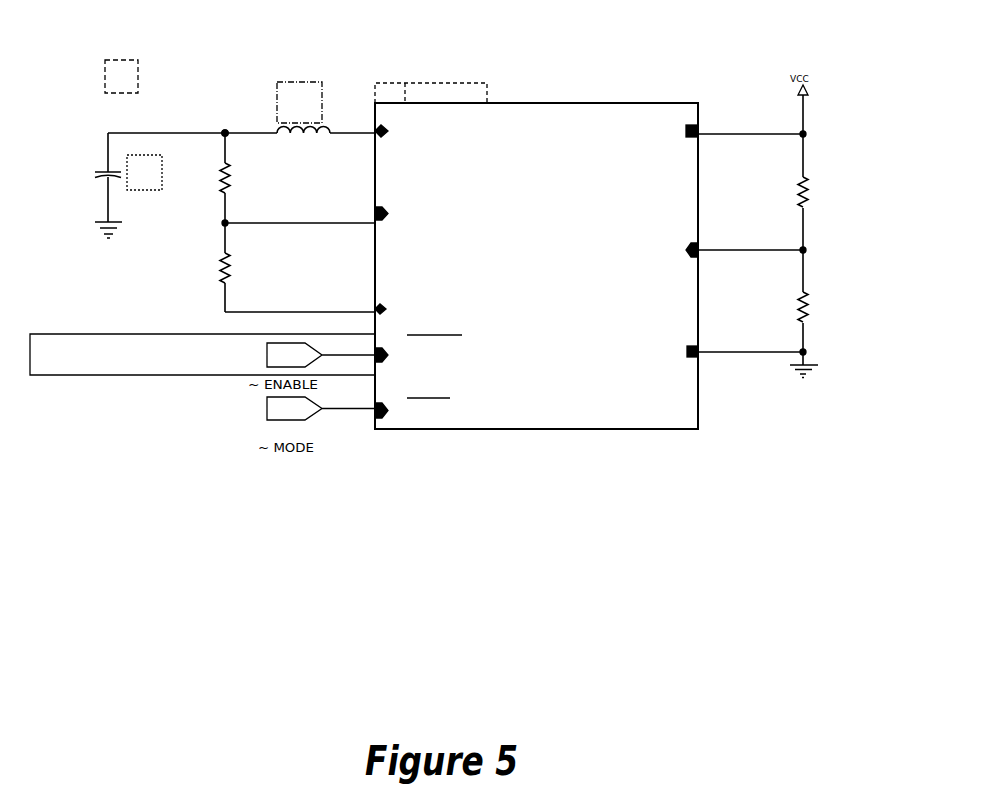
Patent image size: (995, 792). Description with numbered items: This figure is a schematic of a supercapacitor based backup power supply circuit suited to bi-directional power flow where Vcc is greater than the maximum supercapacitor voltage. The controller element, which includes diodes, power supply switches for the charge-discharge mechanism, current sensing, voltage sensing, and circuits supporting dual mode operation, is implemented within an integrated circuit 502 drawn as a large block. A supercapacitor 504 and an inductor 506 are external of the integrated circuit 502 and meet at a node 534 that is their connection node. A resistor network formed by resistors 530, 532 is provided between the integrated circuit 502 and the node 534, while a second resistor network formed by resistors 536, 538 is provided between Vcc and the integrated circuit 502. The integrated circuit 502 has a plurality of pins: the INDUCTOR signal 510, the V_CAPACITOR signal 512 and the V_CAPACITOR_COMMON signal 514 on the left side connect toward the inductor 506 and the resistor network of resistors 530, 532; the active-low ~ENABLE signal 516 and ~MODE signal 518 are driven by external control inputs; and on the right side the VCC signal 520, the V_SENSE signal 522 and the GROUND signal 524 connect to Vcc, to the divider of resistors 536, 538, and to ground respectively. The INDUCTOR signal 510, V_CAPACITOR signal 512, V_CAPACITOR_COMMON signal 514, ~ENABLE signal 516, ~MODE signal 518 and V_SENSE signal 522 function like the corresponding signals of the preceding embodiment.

The integrated circuit 502 is at (525, 103).
The supercapacitor 504 is at (123, 178).
The inductor 506 is at (332, 122).
The INDUCTOR signal 510 is at (410, 110).
The V_CAPACITOR signal 512 is at (395, 193).
The V_CAPACITOR_COMMON signal 514 is at (385, 292).
The ~ENABLE signal 516 is at (462, 357).
The ~MODE signal 518 is at (397, 408).
The VCC signal 520 is at (678, 115).
The V_SENSE signal 522 is at (687, 230).
The GROUND signal 524 is at (687, 335).
The resistor 530 is at (193, 183).
The resistor 532 is at (191, 293).
The node 534 is at (225, 125).
The resistor 536 is at (818, 177).
The resistor 538 is at (818, 292).